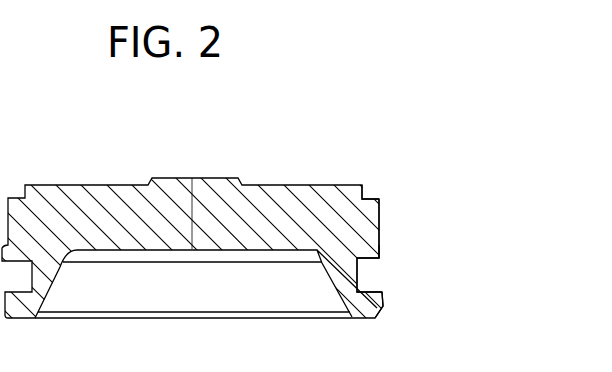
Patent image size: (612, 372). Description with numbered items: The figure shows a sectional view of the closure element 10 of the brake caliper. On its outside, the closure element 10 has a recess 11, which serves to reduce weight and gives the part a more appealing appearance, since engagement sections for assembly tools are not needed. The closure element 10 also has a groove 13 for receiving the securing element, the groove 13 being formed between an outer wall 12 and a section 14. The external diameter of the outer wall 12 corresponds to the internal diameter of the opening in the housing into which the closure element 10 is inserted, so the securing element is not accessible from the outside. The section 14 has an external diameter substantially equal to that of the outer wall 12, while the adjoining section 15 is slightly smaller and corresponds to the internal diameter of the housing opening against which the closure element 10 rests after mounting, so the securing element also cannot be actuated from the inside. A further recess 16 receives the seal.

The closure element 10 is at (263, 144).
The recess 11 is at (183, 295).
The outer wall 12 is at (377, 307).
The groove 13 is at (368, 292).
The section 14 is at (383, 250).
The section 15 is at (378, 215).
The recess 16 is at (372, 197).